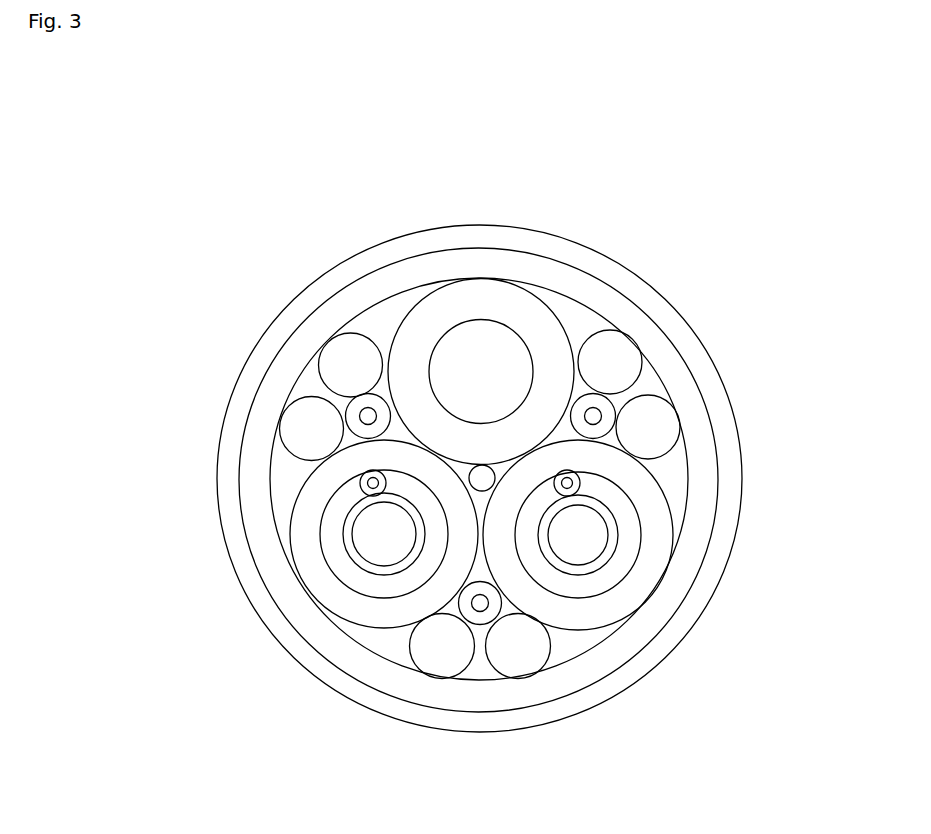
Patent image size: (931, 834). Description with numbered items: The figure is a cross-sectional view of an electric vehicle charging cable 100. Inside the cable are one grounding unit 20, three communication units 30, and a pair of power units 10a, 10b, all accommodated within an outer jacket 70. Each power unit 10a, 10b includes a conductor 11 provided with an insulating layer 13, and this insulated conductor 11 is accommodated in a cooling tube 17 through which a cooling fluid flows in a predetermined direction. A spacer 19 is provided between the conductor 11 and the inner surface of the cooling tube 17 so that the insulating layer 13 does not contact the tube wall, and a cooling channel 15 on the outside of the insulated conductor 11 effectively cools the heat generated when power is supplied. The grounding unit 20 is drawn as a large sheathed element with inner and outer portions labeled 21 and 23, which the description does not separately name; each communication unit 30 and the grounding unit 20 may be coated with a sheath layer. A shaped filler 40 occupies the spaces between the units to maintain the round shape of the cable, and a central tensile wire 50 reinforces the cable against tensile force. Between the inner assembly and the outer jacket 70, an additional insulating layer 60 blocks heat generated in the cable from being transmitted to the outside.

The electric vehicle charging cable 100 is at (233, 198).
The power unit 10a is at (168, 480).
The power unit 10b is at (678, 495).
The conductor 11 is at (363, 525).
The insulating layer 13 is at (328, 550).
The cooling channel 15 is at (312, 578).
The cooling tube 17 is at (312, 598).
The spacer 19 is at (362, 483).
The grounding unit 20 is at (603, 163).
The neutral conductor 21 is at (480, 328).
The neutral insulating layer 23 is at (530, 308).
The communication unit 30 is at (615, 395).
The shaped filler 40 is at (632, 360).
The central tensile wire 50 is at (538, 520).
The additional insulating layer 60 is at (423, 697).
The outer jacket 70 is at (495, 722).